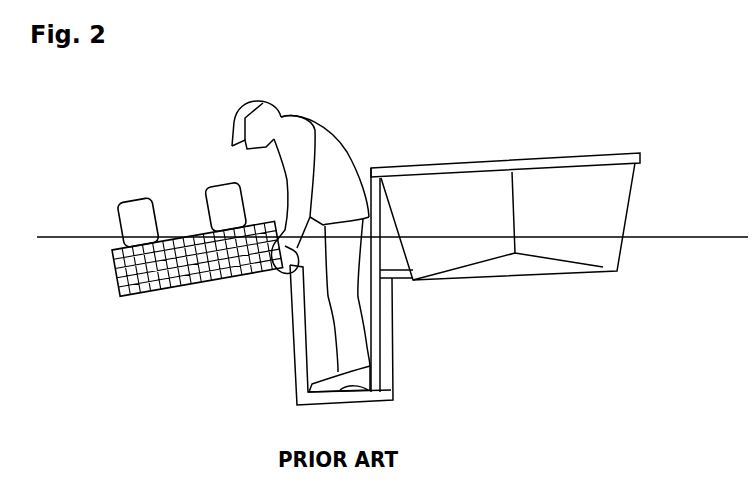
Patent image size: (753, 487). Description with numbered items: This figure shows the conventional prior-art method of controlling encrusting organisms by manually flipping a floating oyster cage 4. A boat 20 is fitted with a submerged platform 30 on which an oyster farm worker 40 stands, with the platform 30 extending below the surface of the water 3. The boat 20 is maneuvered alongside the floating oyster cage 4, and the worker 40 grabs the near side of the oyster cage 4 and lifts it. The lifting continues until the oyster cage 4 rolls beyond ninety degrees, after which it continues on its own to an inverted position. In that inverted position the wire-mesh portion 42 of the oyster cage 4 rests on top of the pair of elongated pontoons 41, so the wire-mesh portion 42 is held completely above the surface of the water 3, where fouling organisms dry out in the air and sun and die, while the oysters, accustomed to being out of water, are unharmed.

The surface of the water 3 is at (657, 237).
The floating oyster cage 4 is at (103, 223).
The elongated pontoons 41 is at (145, 196).
The wire-mesh portion 42 is at (200, 281).
The oyster farm worker 40 is at (333, 122).
The submerged platform 30 is at (393, 358).
The boat 20 is at (479, 160).